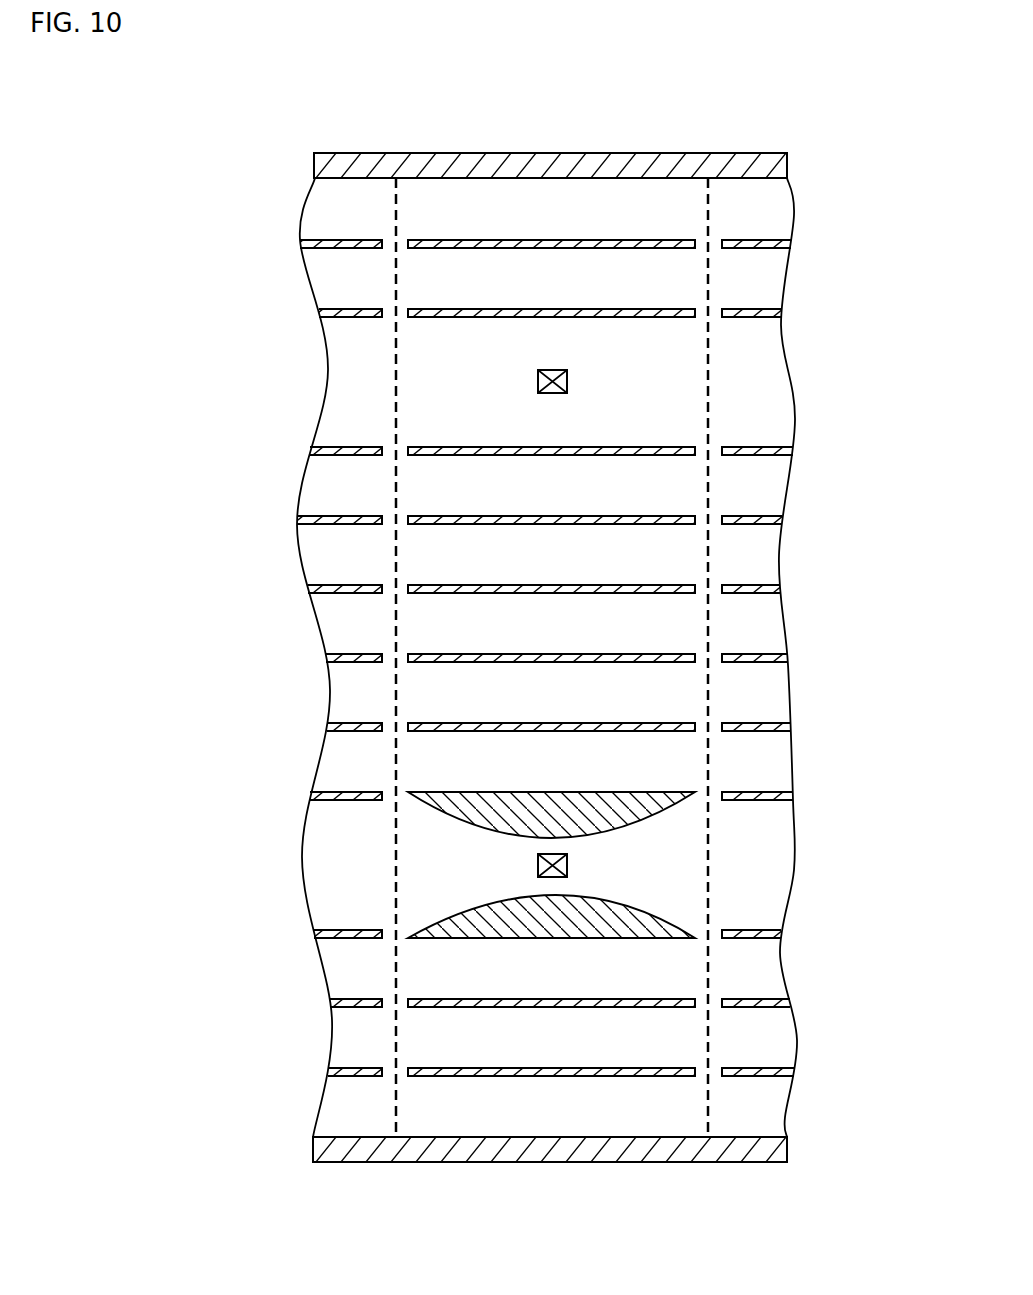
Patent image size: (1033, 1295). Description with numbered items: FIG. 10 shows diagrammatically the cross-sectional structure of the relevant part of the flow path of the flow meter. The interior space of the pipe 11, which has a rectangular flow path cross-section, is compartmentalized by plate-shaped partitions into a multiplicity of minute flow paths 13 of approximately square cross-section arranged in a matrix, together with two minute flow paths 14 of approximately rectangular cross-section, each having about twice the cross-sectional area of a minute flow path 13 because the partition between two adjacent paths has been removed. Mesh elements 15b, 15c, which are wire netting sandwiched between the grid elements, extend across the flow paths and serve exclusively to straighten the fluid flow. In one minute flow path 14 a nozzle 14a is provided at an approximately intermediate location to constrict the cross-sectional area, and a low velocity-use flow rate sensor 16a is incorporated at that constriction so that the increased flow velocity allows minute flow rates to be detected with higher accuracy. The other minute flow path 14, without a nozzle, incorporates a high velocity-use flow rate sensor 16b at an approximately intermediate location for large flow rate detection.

The pipe 11 is at (570, 153).
The minute flow paths 13 is at (670, 288).
The minute flow paths 14 is at (676, 368).
The nozzle 14a is at (552, 892).
The mesh element 15b is at (396, 363).
The mesh element 15c is at (710, 552).
The low velocity-use flow rate sensor 16a is at (567, 866).
The high velocity-use flow rate sensor 16b is at (567, 380).